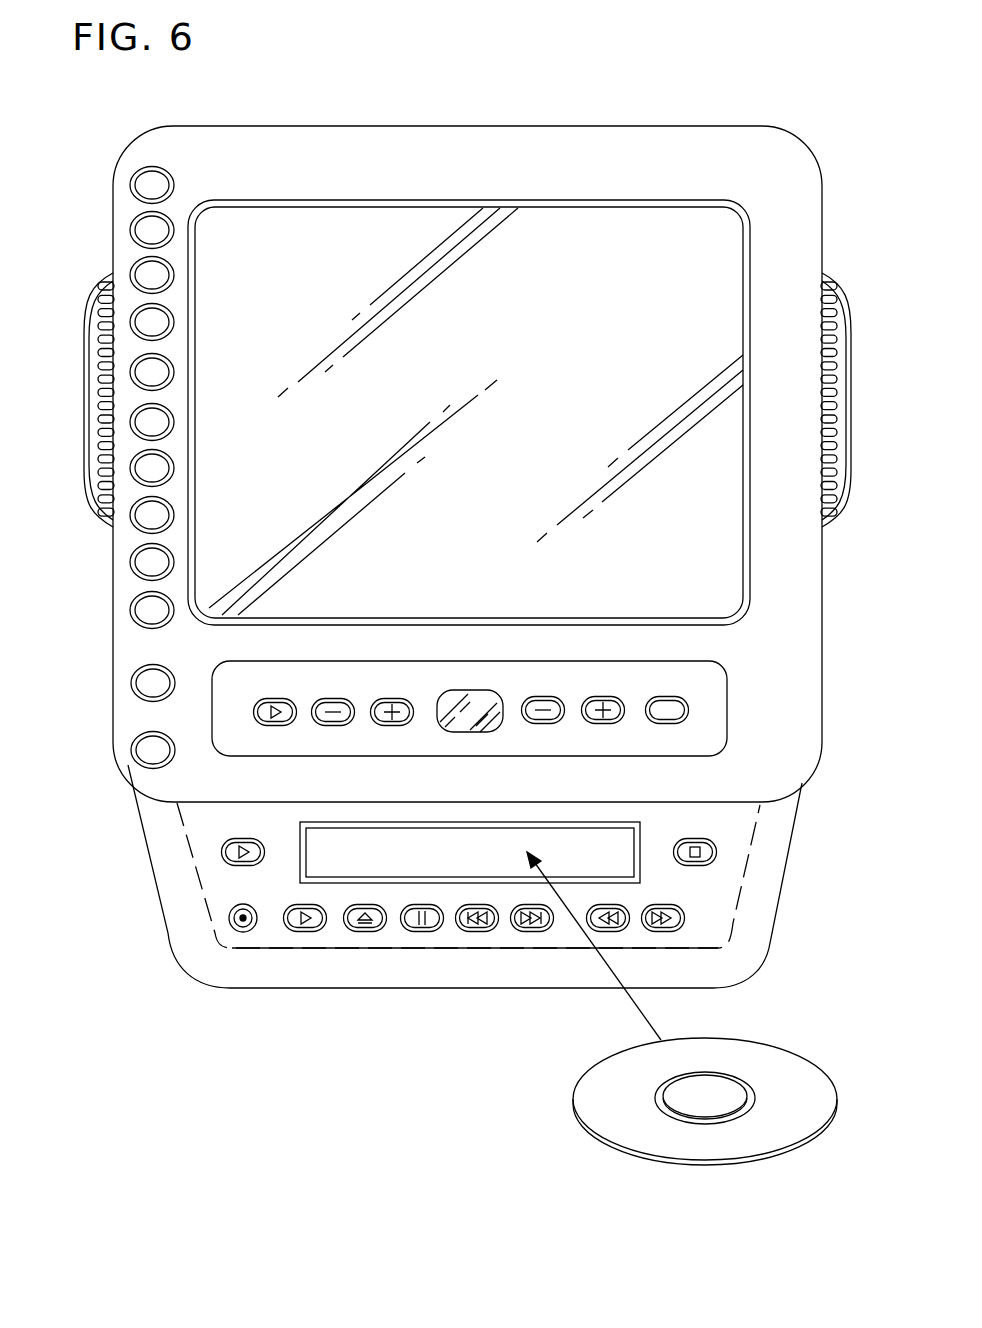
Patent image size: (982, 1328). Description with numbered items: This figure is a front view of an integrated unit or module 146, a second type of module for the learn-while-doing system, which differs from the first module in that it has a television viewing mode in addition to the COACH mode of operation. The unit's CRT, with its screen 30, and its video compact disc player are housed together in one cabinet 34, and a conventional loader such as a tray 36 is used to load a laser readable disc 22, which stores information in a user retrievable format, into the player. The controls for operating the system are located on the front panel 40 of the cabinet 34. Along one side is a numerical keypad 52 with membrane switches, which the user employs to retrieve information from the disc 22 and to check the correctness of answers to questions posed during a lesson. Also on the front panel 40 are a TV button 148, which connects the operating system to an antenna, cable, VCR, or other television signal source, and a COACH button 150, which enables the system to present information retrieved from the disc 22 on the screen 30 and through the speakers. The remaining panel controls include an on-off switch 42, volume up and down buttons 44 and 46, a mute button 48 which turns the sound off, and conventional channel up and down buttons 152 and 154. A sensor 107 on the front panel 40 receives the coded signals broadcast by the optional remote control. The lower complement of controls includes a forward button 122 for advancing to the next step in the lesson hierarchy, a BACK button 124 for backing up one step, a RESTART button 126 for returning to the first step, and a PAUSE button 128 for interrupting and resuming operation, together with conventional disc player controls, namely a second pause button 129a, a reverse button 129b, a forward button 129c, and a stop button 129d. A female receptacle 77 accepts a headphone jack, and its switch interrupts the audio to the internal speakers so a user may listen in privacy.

The integrated unit or module 146 is at (446, 533).
The front panel 40 is at (805, 627).
The numerical keypad 52 is at (71, 336).
The screen 30 is at (553, 392).
The cabinet 34 is at (113, 612).
The TV button 148 is at (132, 688).
The COACH button 150 is at (130, 752).
The mute button 48 is at (270, 698).
The volume down button 46 is at (333, 698).
The volume up button 44 is at (392, 698).
The sensor 107 is at (492, 726).
The channel down button 154 is at (541, 697).
The channel up button 152 is at (603, 697).
The on-off switch 42 is at (670, 697).
The tray 36 is at (447, 838).
The stop button 129d is at (720, 852).
The female receptacle 77 is at (240, 932).
The RESTART button 126 is at (307, 932).
The PAUSE button 128 is at (365, 932).
The second pause button 129a is at (424, 932).
The BACK button 124 is at (482, 932).
The forward (FWD) button 122 is at (542, 932).
The reverse button 129b is at (612, 932).
The forward button 129c is at (687, 917).
The laser readable disc 22 is at (580, 1070).